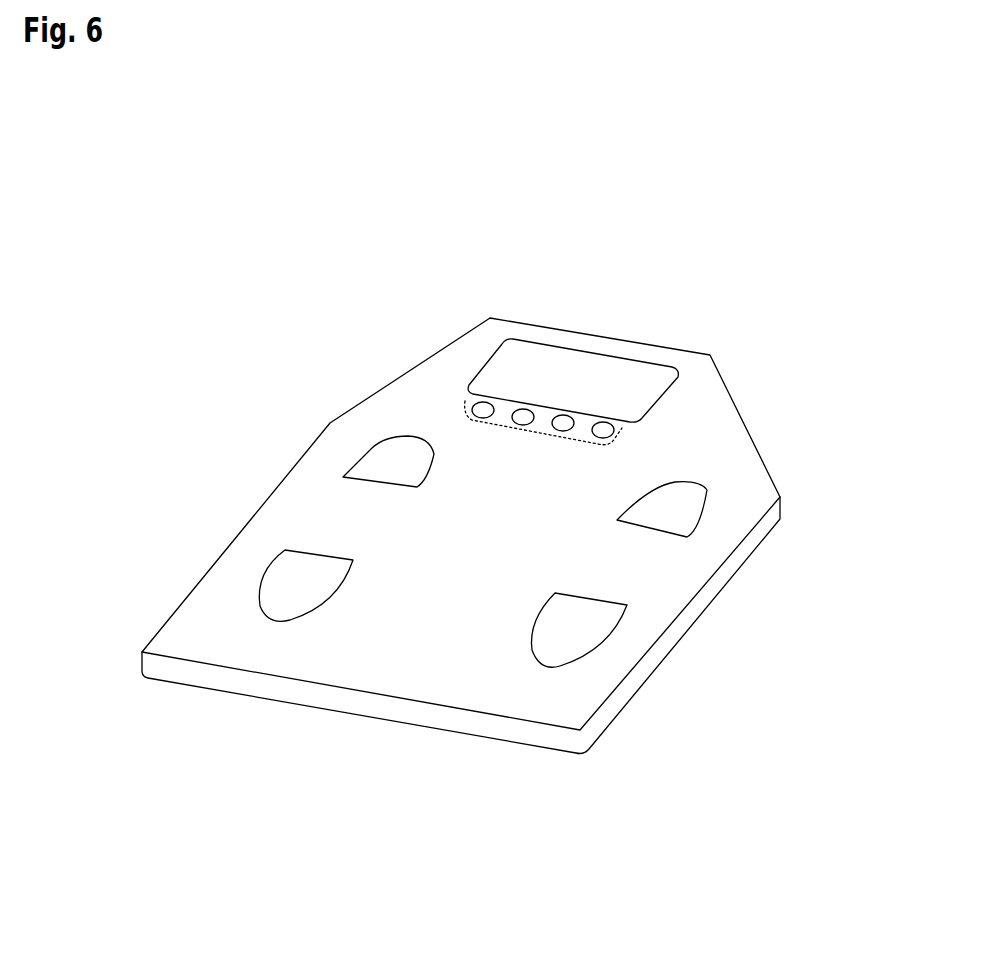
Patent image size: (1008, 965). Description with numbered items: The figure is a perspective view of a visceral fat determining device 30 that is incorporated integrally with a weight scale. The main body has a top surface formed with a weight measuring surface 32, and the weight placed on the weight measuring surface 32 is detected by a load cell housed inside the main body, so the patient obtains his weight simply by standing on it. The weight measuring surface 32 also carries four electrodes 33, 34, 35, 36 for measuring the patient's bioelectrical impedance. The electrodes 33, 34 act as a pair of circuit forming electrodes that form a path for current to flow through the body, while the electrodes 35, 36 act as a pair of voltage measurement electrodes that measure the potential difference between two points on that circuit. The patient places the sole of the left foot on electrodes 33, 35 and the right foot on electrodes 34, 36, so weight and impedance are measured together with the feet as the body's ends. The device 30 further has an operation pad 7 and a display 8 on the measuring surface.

The visceral fat determining device 30 is at (690, 317).
The weight measuring surface 32 is at (317, 513).
The display 8 is at (557, 360).
The operation pad 7 is at (618, 434).
The electrode 33 is at (397, 450).
The electrode 34 is at (677, 513).
The electrode 35 is at (277, 608).
The electrode 36 is at (550, 650).